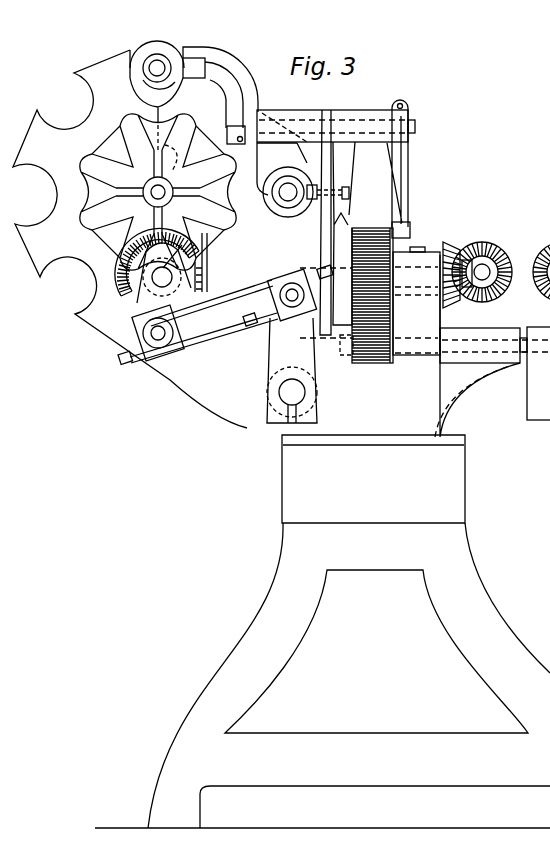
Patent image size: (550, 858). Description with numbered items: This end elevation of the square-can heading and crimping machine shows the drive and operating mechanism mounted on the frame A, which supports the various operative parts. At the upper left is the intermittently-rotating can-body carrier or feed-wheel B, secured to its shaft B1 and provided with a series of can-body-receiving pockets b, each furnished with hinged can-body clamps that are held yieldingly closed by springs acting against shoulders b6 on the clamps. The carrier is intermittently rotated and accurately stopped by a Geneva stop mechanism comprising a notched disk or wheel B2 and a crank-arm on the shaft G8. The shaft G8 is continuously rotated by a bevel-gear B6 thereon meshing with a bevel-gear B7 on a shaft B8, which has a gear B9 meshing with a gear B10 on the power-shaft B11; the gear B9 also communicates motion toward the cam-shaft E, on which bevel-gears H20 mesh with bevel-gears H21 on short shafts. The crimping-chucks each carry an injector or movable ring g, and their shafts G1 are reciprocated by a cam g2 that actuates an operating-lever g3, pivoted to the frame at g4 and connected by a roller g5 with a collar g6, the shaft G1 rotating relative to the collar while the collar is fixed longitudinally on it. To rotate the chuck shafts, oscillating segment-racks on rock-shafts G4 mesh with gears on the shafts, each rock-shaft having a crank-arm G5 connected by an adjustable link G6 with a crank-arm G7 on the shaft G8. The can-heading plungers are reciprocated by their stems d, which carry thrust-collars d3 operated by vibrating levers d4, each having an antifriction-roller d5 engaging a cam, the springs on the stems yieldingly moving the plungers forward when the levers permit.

The frame A is at (322, 541).
The can-body-receiving pockets b is at (130, 239).
The can-body carrier or feed-wheel B is at (158, 182).
The intermittently-rotating shaft B1 is at (118, 192).
The notched disk or wheel B2 is at (100, 158).
The shoulders b6 is at (70, 288).
The bevel-gear B6 is at (150, 282).
The bevel-gear B7 is at (160, 350).
The shaft B8 is at (161, 265).
The gear B9 is at (393, 312).
The gear B10 is at (373, 360).
The power-shaft B11 is at (522, 360).
The stems d is at (147, 63).
The thrust-collars d3 is at (190, 47).
The vibrating levers d4 is at (232, 88).
The antifriction-roller d5 is at (389, 228).
The cam-shaft E is at (486, 273).
The injector or movable ring g is at (306, 233).
The cam g2 is at (343, 317).
The operating-lever g3 is at (337, 123).
The pivot g4 is at (417, 122).
The roller g5 is at (327, 173).
The collar g6 is at (292, 208).
The crimping-chuck shaft G1 is at (286, 194).
The rock-shaft G4 is at (292, 395).
The crank-arm G5 is at (287, 312).
The adjustable link G6 is at (235, 325).
The crank-arm G7 is at (143, 290).
The shaft G8 is at (160, 279).
The bevel-gears H20 is at (484, 268).
The bevel-gears H21 is at (455, 250).